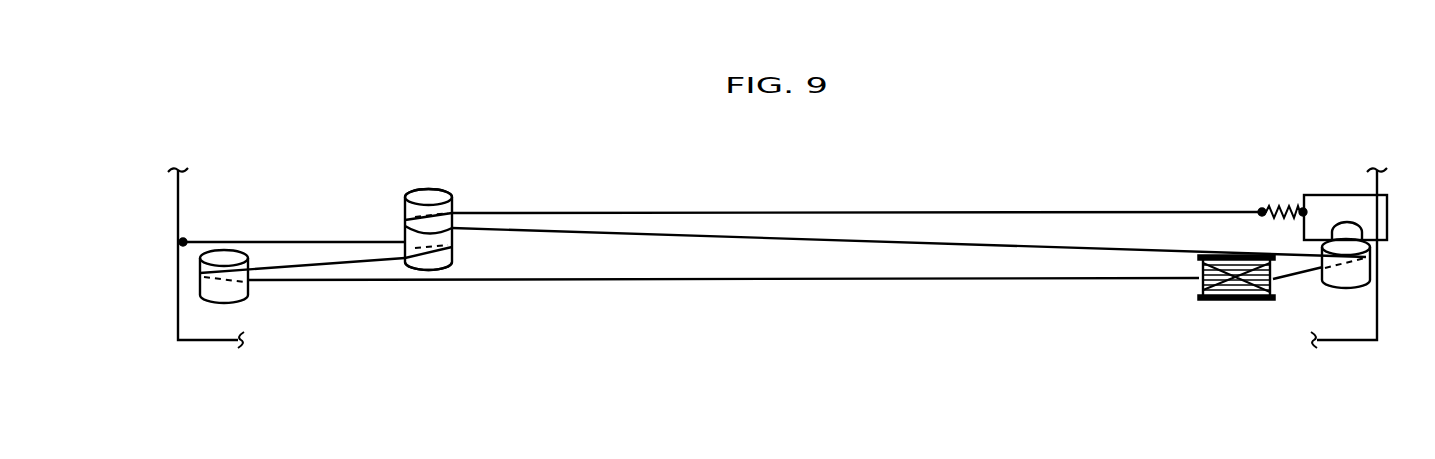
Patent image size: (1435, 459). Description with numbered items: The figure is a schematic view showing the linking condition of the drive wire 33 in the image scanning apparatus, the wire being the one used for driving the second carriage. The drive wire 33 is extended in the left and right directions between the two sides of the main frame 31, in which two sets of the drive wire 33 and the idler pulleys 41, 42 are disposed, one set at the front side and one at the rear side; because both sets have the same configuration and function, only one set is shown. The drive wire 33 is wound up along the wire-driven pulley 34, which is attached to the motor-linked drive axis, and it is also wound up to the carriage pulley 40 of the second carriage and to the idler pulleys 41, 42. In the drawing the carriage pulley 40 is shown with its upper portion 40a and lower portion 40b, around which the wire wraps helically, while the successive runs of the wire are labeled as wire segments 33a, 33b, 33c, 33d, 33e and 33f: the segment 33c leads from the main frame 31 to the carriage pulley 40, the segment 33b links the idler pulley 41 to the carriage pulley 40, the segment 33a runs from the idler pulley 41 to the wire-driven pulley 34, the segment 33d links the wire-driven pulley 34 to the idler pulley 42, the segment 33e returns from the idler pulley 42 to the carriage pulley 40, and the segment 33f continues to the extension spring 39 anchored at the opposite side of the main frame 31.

The main frame 31 is at (178, 200).
The drive wire 33 is at (737, 200).
The wire segment a 33a is at (868, 282).
The wire segment b 33b is at (327, 265).
The wire segment c 33c is at (282, 240).
The wire segment d 33d is at (1287, 281).
The wire segment e 33e is at (780, 238).
The wire segment f 33f is at (643, 212).
The wire-driven pulley 34 is at (1225, 302).
The extension spring 39 is at (1280, 205).
The carriage pulley 40 is at (440, 177).
The upper pulley portion 40a is at (423, 190).
The lower pulley portion 40b is at (427, 267).
The idler pulley 41 is at (242, 307).
The idler pulley 42 is at (1338, 292).